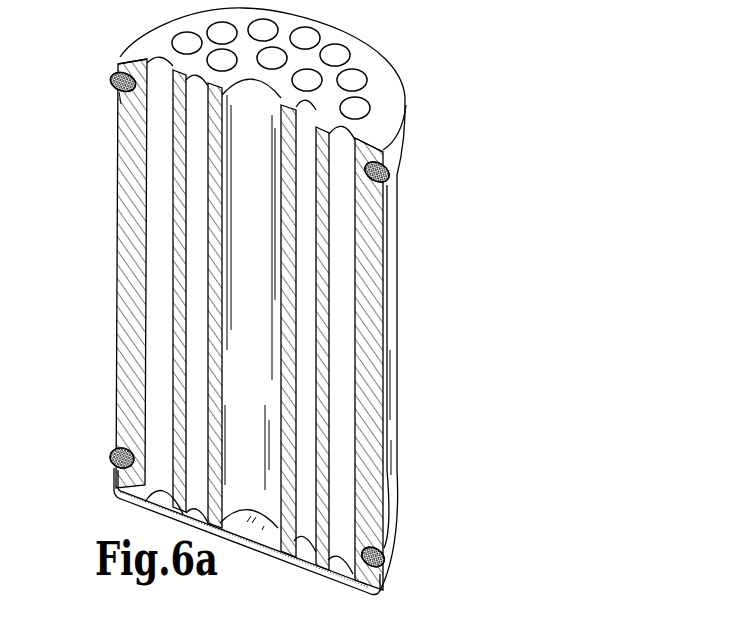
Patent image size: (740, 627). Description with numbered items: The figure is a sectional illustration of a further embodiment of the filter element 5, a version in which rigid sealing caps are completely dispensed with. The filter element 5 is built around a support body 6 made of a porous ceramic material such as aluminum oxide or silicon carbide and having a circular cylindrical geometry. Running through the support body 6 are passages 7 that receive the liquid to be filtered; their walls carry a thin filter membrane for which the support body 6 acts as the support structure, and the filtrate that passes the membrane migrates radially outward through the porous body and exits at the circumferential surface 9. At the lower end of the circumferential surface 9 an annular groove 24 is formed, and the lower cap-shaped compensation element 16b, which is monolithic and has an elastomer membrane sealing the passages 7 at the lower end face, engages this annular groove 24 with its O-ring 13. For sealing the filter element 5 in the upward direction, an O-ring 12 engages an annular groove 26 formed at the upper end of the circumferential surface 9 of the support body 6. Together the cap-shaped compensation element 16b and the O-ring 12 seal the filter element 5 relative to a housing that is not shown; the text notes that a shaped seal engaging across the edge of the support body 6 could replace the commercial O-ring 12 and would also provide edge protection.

The filter element 5 is at (340, 91).
The support body 6 is at (130, 278).
The passages 7 is at (337, 55).
The circumferential surface 9 is at (408, 310).
The O-ring 12 is at (111, 77).
The O-ring 13 is at (110, 453).
The lower cap-shaped compensation element 16b is at (410, 572).
The annular groove 24 is at (357, 578).
The annular groove 26 is at (116, 111).